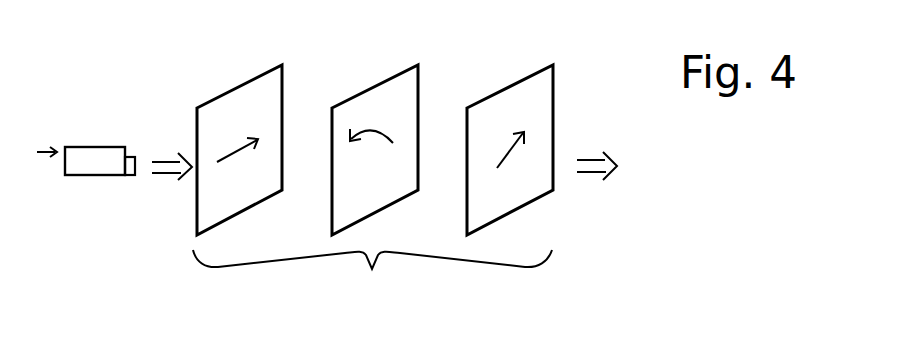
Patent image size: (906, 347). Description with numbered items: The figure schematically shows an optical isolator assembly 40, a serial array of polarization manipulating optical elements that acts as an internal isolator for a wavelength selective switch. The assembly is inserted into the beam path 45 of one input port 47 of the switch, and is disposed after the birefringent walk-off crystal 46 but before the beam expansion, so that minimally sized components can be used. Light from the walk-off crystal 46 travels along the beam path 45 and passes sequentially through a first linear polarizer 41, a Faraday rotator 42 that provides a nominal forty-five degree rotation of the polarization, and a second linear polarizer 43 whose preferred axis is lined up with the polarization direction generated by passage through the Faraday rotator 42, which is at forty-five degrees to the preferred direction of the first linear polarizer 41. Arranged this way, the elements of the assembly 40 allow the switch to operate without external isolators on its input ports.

The optical isolator assembly 40 is at (372, 277).
The first linear polarizer 41 is at (243, 210).
The Faraday rotator 42 is at (378, 212).
The second linear polarizer 43 is at (517, 212).
The beam path 45 is at (165, 176).
The birefringent walk-off crystal 46 is at (88, 176).
The input port 47 is at (48, 157).